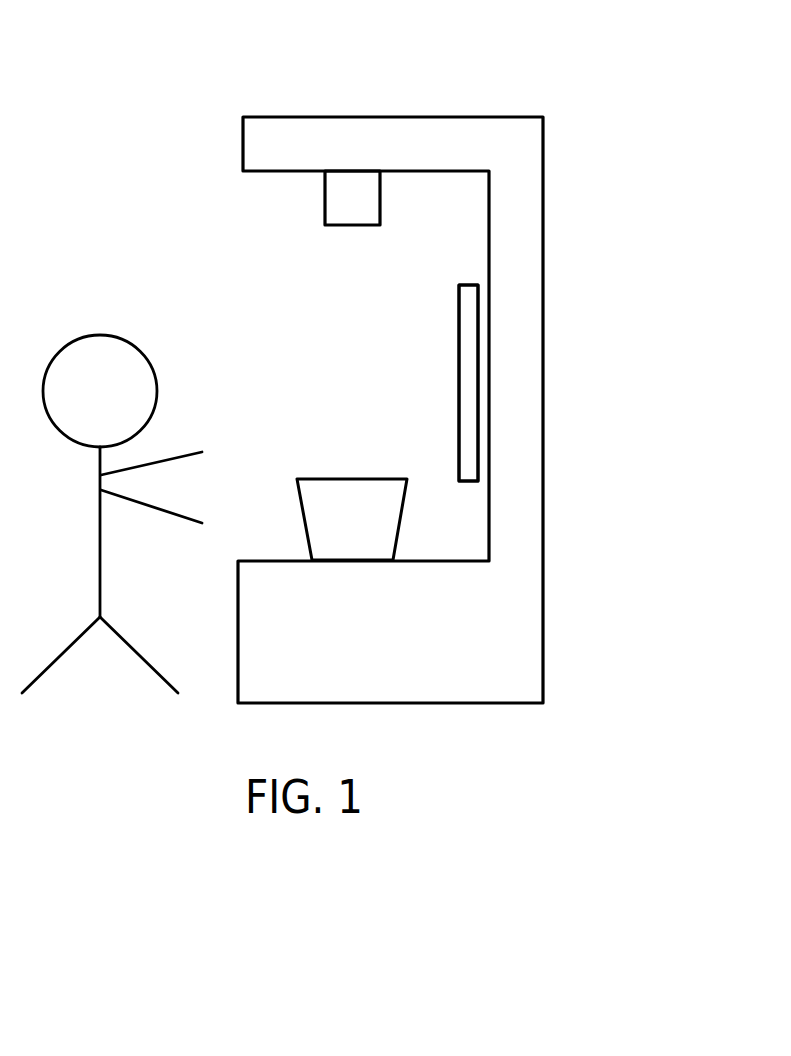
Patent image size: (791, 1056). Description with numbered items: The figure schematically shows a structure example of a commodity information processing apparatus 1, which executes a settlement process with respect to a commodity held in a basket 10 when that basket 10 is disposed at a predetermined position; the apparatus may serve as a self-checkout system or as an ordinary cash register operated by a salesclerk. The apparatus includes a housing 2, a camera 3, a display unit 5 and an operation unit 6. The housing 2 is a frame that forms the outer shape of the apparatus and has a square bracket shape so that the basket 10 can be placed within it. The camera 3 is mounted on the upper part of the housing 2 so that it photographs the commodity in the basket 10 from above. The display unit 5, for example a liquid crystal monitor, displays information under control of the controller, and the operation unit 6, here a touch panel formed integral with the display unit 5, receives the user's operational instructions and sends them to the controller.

The commodity information processing apparatus 1 is at (389, 82).
The housing 2 is at (543, 272).
The camera 3 is at (345, 226).
The display unit 5 is at (459, 387).
The operation unit 6 is at (468, 383).
The basket 10 is at (362, 478).